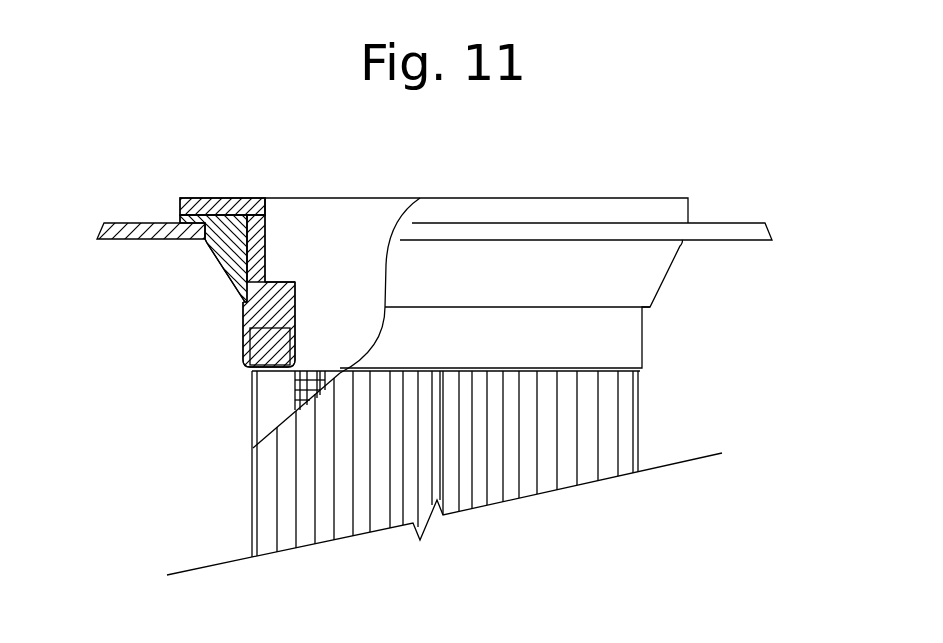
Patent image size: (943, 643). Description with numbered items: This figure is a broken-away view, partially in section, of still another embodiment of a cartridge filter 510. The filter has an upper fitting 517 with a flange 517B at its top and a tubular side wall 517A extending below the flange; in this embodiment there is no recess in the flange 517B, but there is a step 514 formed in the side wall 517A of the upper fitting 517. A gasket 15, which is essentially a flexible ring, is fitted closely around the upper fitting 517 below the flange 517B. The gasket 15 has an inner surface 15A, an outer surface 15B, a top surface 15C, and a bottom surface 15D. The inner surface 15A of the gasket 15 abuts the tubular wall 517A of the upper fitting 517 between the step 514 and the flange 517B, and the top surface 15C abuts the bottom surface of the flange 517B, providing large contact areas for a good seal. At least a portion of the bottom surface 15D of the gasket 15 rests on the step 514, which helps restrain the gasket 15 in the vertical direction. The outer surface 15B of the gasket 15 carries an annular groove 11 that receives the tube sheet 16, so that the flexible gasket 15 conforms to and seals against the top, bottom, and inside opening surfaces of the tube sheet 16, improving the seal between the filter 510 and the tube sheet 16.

The cartridge filter 510 is at (654, 160).
The upper fitting 517 is at (462, 198).
The side wall 517A is at (642, 347).
The flange 517B is at (688, 212).
The gasket 15 is at (667, 269).
The inner surface 15A is at (265, 257).
The outer surface 15B is at (218, 277).
The top surface 15C is at (193, 212).
The bottom surface 15D is at (245, 302).
The step 514 is at (247, 303).
The tube sheet 16 is at (122, 222).
The annular groove 11 is at (205, 228).